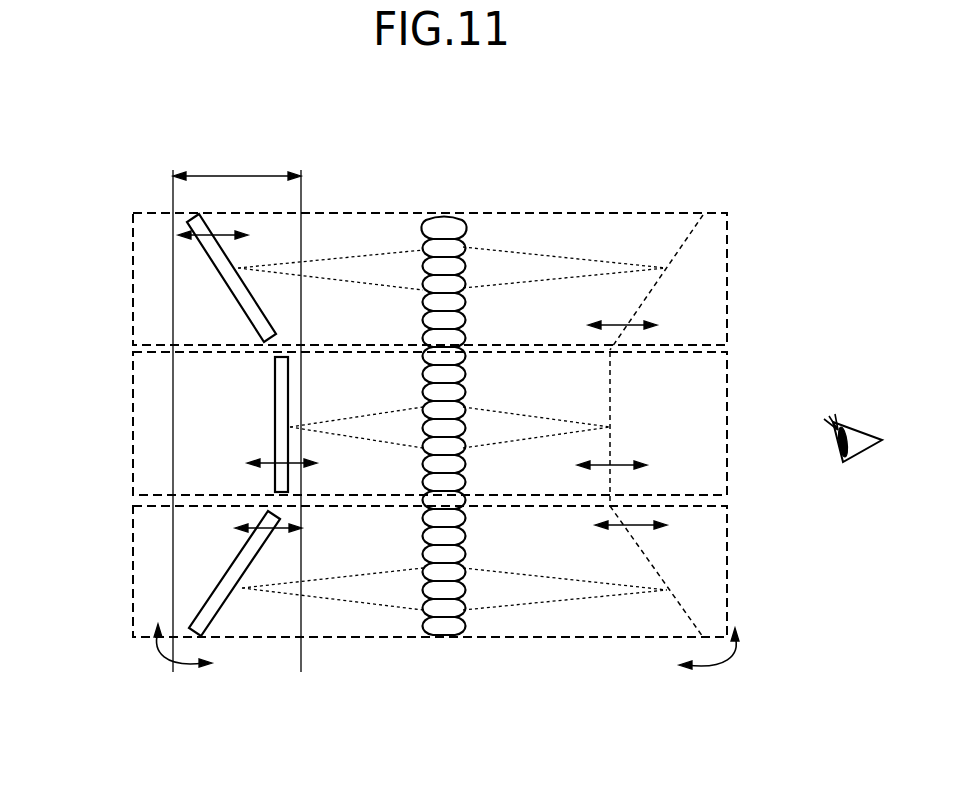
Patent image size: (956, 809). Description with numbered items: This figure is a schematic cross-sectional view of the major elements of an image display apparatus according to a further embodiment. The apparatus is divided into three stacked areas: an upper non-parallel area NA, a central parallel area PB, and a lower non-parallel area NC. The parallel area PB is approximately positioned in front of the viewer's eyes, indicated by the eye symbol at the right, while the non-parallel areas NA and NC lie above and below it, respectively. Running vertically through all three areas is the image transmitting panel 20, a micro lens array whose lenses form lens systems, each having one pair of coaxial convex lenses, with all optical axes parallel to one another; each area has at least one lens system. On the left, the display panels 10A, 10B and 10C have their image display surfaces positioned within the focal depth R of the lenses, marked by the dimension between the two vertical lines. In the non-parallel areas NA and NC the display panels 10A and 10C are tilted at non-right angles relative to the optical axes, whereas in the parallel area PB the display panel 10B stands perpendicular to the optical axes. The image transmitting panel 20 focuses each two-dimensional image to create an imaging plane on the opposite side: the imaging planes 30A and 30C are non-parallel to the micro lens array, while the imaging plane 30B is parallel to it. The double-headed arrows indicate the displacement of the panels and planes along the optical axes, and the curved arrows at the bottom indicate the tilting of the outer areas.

The focal depth R is at (237, 163).
The image transmitting panel 20 is at (443, 228).
The display panel 10A is at (227, 275).
The display panel 10B is at (280, 410).
The display panel 10C is at (235, 573).
The imaging plane 30A is at (640, 308).
The imaging plane 30B is at (611, 412).
The imaging plane 30C is at (640, 547).
The non-parallel area NA is at (133, 286).
The parallel area PB is at (133, 425).
The non-parallel area NC is at (133, 580).